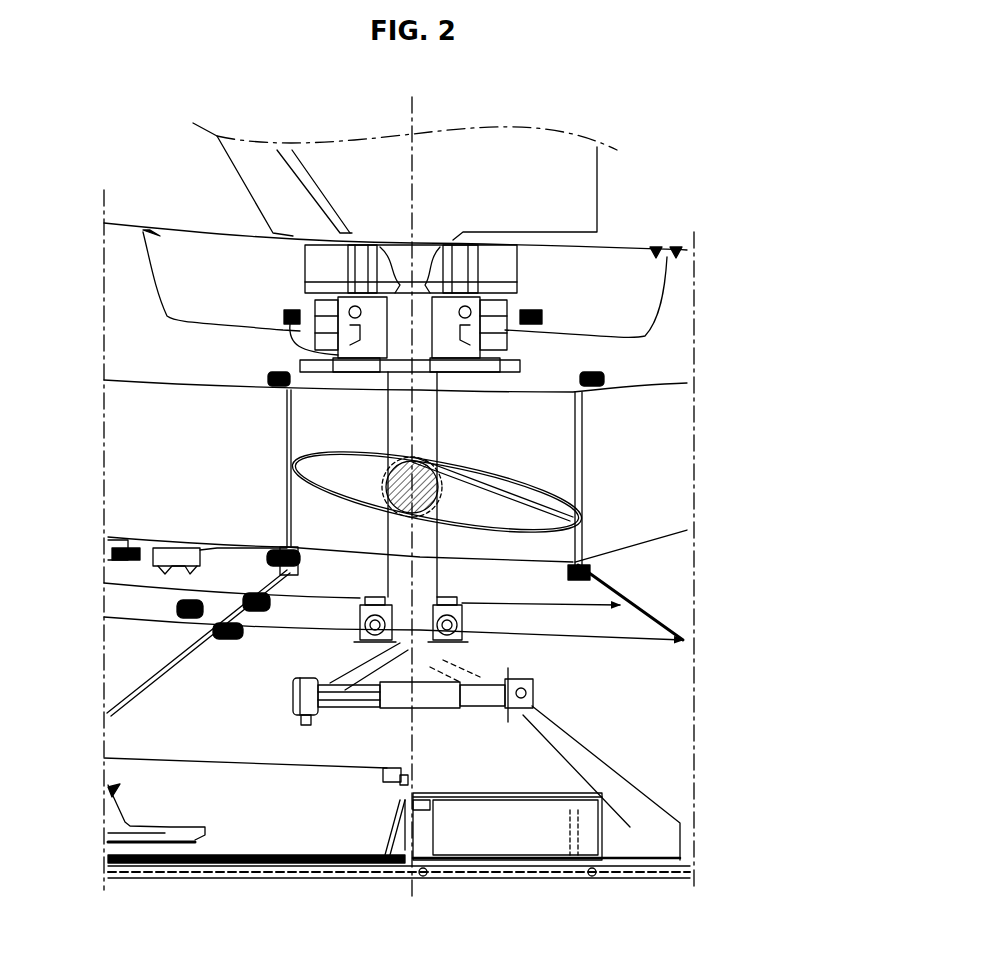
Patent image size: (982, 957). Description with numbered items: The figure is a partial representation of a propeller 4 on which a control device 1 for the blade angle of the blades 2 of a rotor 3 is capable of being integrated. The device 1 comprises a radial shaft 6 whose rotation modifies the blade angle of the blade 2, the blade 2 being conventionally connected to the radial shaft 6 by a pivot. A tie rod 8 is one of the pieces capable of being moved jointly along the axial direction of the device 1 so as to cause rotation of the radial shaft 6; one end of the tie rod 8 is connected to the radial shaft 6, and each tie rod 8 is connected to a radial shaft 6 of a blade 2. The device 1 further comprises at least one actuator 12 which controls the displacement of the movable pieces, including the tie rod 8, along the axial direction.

The control device 1 is at (497, 657).
The blade 2 is at (542, 186).
The rotor 3 is at (148, 475).
The propeller 4 is at (768, 278).
The radial shaft 6 is at (440, 430).
The tie rod 8 is at (450, 723).
The actuator 12 is at (510, 837).